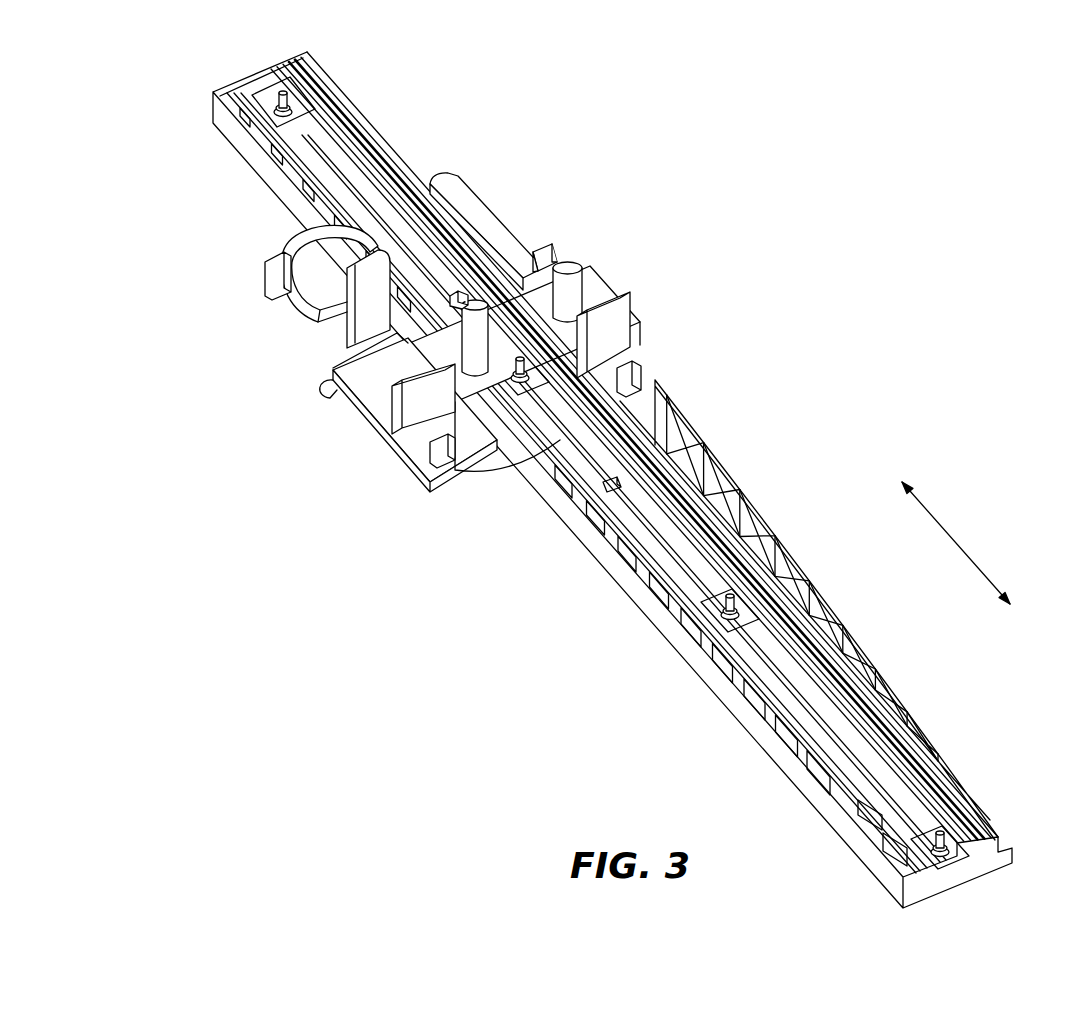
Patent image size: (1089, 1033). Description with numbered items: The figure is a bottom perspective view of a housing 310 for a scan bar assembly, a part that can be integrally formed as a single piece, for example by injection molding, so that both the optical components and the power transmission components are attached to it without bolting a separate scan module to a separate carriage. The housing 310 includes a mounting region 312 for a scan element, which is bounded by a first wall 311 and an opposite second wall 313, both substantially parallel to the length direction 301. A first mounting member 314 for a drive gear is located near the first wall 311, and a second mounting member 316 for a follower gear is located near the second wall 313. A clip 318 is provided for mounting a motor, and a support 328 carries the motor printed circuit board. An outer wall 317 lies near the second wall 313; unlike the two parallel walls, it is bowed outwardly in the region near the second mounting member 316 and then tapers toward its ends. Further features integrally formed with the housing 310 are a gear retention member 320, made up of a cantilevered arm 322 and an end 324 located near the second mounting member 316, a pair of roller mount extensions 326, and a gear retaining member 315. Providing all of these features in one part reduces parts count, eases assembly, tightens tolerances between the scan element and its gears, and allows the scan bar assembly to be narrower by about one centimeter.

The length direction 301 is at (953, 540).
The housing 310 is at (903, 294).
The first wall 311 is at (856, 796).
The mounting region 312 is at (316, 140).
The second wall 313 is at (918, 802).
The first mounting member 314 is at (473, 330).
The gear retaining member 315 is at (453, 297).
The second mounting member 316 is at (580, 275).
The outer wall 317 is at (760, 512).
The clip 318 is at (317, 250).
The gear retention member 320 is at (553, 232).
The cantilevered arm 322 is at (503, 253).
The end 324 is at (547, 263).
The roller mount extensions 326 is at (430, 403).
The support 328 is at (300, 262).